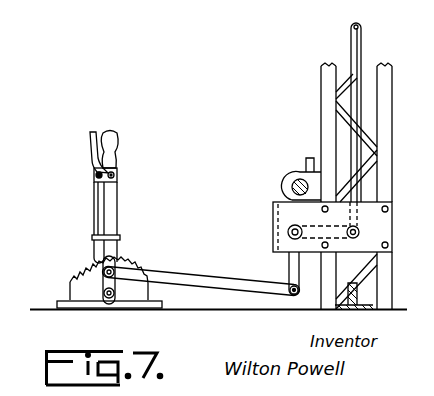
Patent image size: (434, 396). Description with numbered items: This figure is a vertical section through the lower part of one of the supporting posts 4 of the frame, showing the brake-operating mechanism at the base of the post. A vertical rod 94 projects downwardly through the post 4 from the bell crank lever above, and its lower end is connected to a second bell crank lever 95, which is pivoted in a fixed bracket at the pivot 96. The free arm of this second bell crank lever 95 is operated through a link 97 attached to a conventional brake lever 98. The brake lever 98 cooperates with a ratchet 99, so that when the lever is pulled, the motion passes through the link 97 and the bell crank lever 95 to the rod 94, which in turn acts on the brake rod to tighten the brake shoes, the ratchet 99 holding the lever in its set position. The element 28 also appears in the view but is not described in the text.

The post 4 is at (321, 116).
The frame member 28 is at (9, 180).
The vertical rod 94 is at (352, 30).
The second bell crank lever 95 is at (288, 263).
The pivot 96 is at (288, 232).
The link 97 is at (204, 273).
The brake lever 98 is at (117, 210).
The ratchet 99 is at (72, 288).